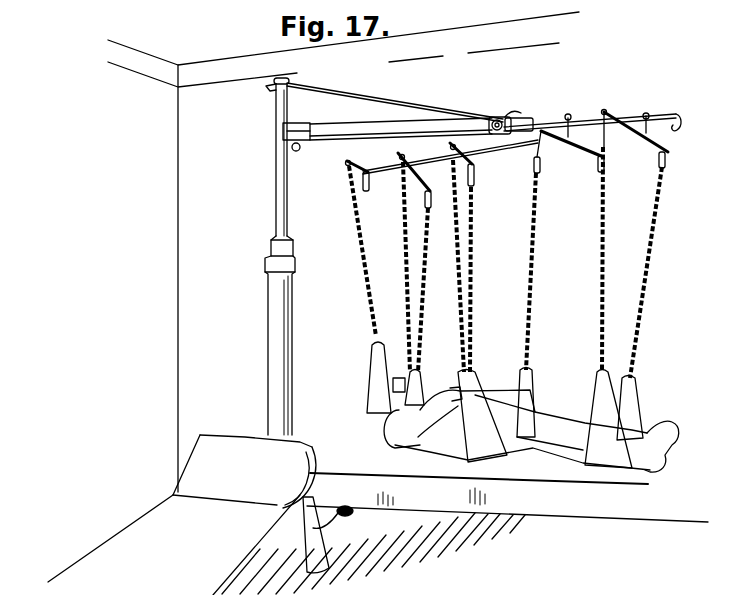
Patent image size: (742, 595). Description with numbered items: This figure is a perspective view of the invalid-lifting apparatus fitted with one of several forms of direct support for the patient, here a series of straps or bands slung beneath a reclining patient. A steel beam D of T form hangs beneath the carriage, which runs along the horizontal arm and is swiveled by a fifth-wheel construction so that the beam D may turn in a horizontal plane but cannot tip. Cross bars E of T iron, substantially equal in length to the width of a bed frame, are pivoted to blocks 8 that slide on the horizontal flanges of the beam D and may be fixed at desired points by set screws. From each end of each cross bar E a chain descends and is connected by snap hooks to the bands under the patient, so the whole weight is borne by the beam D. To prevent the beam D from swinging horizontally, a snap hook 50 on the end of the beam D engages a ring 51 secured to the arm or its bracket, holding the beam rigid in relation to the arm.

The ring 51 is at (299, 150).
The snap hook 50 is at (360, 191).
The blocks 8 is at (570, 131).
The cross bars E is at (618, 121).
The beam D is at (670, 112).
The link e is at (657, 158).